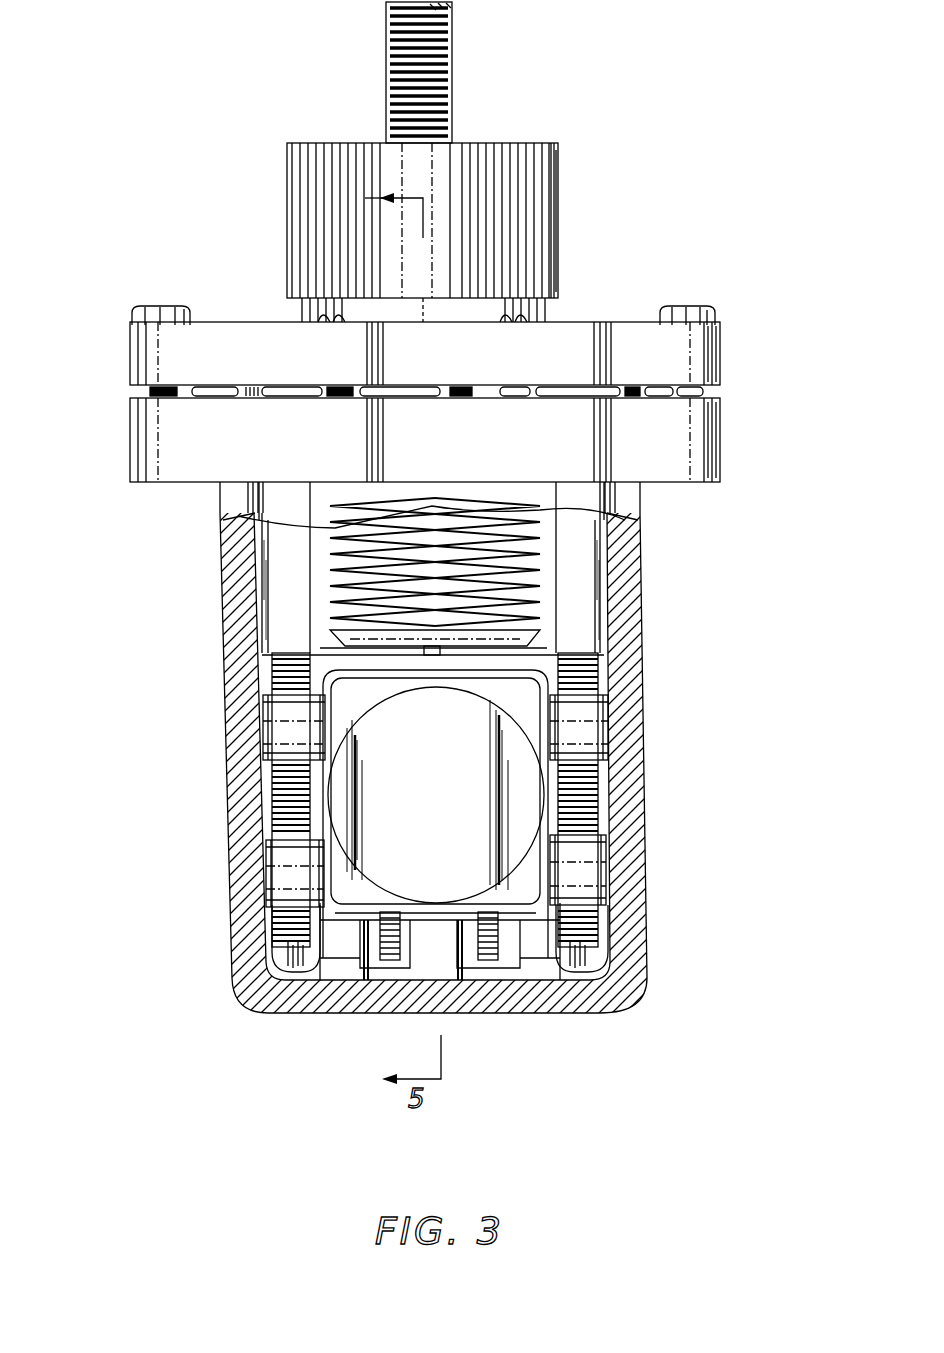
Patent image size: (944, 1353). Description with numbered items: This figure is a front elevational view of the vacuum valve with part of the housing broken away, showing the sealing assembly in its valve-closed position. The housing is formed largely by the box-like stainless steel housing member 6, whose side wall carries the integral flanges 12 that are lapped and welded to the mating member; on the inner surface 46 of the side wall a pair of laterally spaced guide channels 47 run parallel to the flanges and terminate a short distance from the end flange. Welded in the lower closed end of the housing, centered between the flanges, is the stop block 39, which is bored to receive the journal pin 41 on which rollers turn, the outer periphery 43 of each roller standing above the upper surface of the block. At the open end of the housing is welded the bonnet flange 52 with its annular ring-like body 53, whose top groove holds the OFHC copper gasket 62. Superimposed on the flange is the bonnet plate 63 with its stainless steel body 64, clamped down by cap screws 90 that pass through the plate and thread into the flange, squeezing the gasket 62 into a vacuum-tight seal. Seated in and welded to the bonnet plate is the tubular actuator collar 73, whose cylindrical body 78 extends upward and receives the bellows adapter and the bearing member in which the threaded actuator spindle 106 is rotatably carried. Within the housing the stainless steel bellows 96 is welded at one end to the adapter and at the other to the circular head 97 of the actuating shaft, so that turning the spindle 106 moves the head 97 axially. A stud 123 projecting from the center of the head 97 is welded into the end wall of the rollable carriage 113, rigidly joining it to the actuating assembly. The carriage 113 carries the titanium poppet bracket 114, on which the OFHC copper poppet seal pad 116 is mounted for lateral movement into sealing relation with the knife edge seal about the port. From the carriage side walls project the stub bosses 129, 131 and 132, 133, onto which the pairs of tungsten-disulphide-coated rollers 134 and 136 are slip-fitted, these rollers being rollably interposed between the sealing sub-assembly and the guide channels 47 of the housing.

The threaded actuator spindle 106 is at (452, 82).
The actuator collar 73 is at (284, 237).
The cylindrical body of the actuator collar 78 is at (557, 228).
The cap screws 90 is at (700, 302).
The bonnet plate 63 is at (128, 355).
The body of the bonnet plate 64 is at (712, 356).
The annular gasket 62 is at (288, 393).
The bonnet flange 52 is at (128, 432).
The annular ring-like body 53 is at (708, 440).
The integral flanges 12 is at (238, 737).
The housing member 6 is at (612, 500).
The guide channels or grooves 47 is at (285, 598).
The inner surface of the side wall 46 is at (320, 533).
The bellows 96 is at (505, 518).
The circular head of the bellows actuating shaft 97 is at (517, 644).
The stud 123 is at (430, 656).
The poppet bracket 114 is at (358, 709).
The poppet seal pad 116 is at (486, 791).
The rollers 134 is at (292, 772).
The stub boss 129 is at (288, 716).
The stub boss 131 is at (607, 730).
The stub boss 132 is at (272, 882).
The stub boss 133 is at (600, 889).
The rollers 136 is at (290, 926).
The outer periphery of the roller 43 is at (488, 918).
The rollable carriage 113 is at (348, 948).
The journal pin 41 is at (395, 932).
The stop block 39 is at (466, 950).